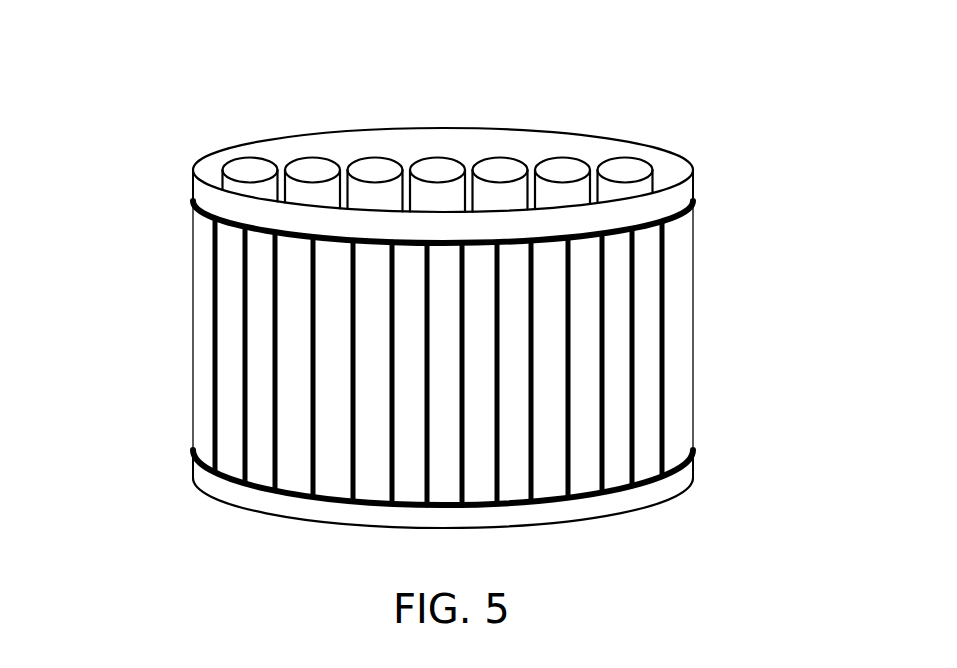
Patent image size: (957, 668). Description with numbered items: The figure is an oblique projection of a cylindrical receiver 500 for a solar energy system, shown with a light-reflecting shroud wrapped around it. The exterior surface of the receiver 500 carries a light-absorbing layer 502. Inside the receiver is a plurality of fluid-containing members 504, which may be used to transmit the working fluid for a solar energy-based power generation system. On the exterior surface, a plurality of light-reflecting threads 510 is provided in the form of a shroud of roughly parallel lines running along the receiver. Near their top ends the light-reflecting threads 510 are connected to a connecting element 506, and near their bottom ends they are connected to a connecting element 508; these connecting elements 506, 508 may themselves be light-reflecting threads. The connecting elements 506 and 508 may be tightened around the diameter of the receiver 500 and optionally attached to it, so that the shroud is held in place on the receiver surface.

The cylindrical receiver 500 is at (125, 98).
The light-absorbing layer 502 is at (597, 505).
The fluid-containing members 504 is at (438, 170).
The connecting element 506 is at (693, 202).
The connecting element 508 is at (692, 450).
The light-reflecting threads 510 is at (243, 340).